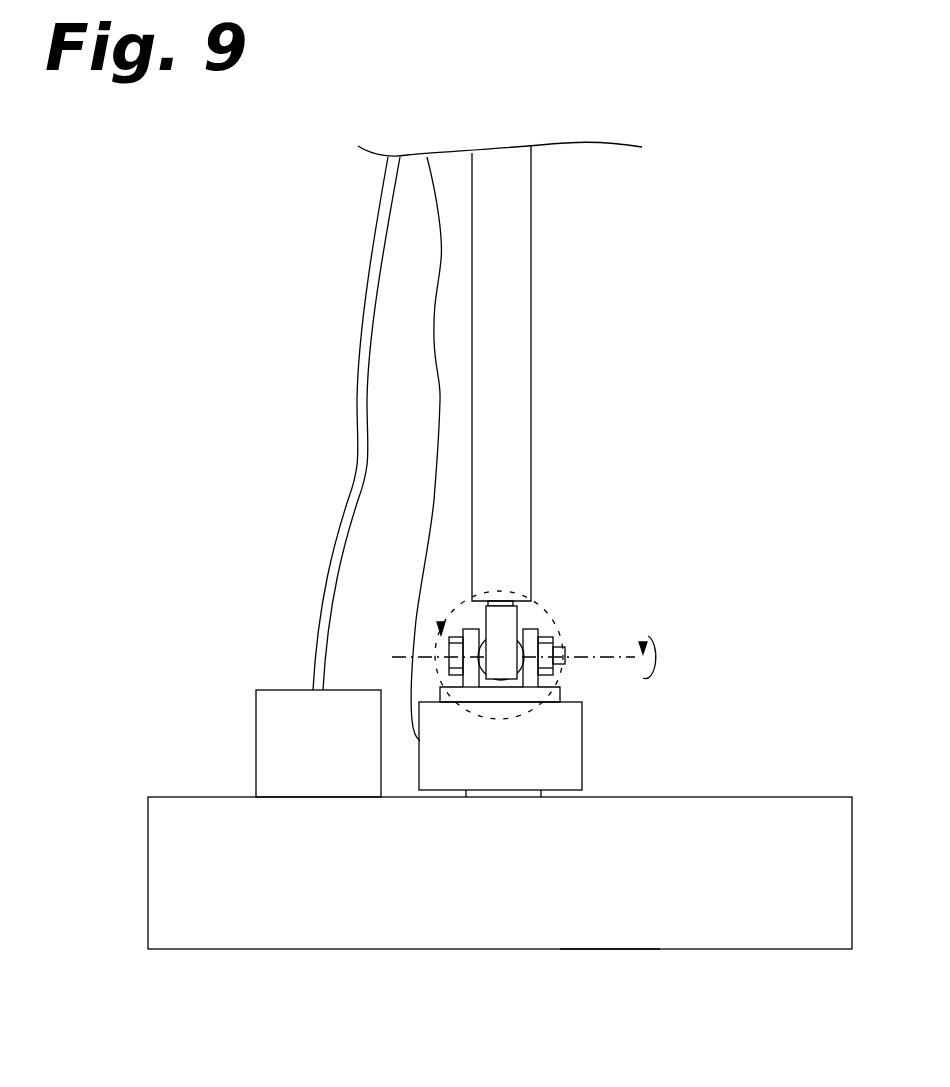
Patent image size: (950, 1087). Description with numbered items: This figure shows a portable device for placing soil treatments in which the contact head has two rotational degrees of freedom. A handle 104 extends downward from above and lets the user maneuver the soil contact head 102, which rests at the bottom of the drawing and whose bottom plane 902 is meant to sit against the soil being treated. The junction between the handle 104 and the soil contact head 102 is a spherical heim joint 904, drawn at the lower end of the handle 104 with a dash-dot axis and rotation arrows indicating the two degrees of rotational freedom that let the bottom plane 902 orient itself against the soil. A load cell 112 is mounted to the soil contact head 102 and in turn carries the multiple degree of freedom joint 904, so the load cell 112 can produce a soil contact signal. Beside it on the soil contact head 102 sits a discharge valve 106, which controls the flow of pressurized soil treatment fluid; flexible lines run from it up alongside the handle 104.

The handle 104 is at (525, 313).
The heim joint 904 is at (501, 628).
The load cell 112 is at (572, 755).
The discharge valve 106 is at (265, 730).
The soil contact head 102 is at (158, 872).
The bottom plane 902 is at (605, 949).